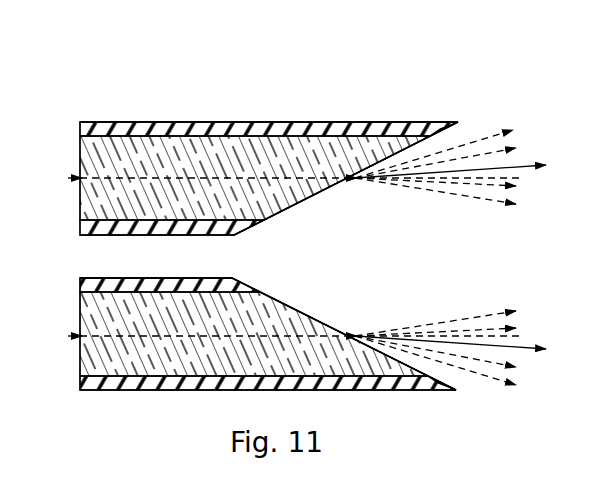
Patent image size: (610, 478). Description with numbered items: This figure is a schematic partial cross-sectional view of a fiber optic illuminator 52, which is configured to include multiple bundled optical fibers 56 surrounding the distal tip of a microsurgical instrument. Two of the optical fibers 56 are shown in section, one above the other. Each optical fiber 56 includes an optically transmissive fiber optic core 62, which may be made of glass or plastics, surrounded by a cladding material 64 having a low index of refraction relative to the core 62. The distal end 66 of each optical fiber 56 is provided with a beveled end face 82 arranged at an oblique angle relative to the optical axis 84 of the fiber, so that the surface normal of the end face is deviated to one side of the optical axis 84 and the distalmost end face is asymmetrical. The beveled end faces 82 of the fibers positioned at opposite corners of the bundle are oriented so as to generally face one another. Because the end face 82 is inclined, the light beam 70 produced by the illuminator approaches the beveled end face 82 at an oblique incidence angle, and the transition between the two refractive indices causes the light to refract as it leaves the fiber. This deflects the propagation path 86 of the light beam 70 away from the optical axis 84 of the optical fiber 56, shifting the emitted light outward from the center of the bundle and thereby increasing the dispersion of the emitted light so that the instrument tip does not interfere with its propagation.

The fiber optic illuminator 52 is at (232, 104).
The optical fiber 56 is at (215, 122).
The fiber optic core 62 is at (163, 150).
The cladding material 64 is at (112, 122).
The distal end 66 is at (452, 126).
The light beam 70 is at (472, 200).
The beveled end face 82 is at (307, 198).
The optical axis 84 is at (277, 177).
The propagation path 86 is at (525, 168).